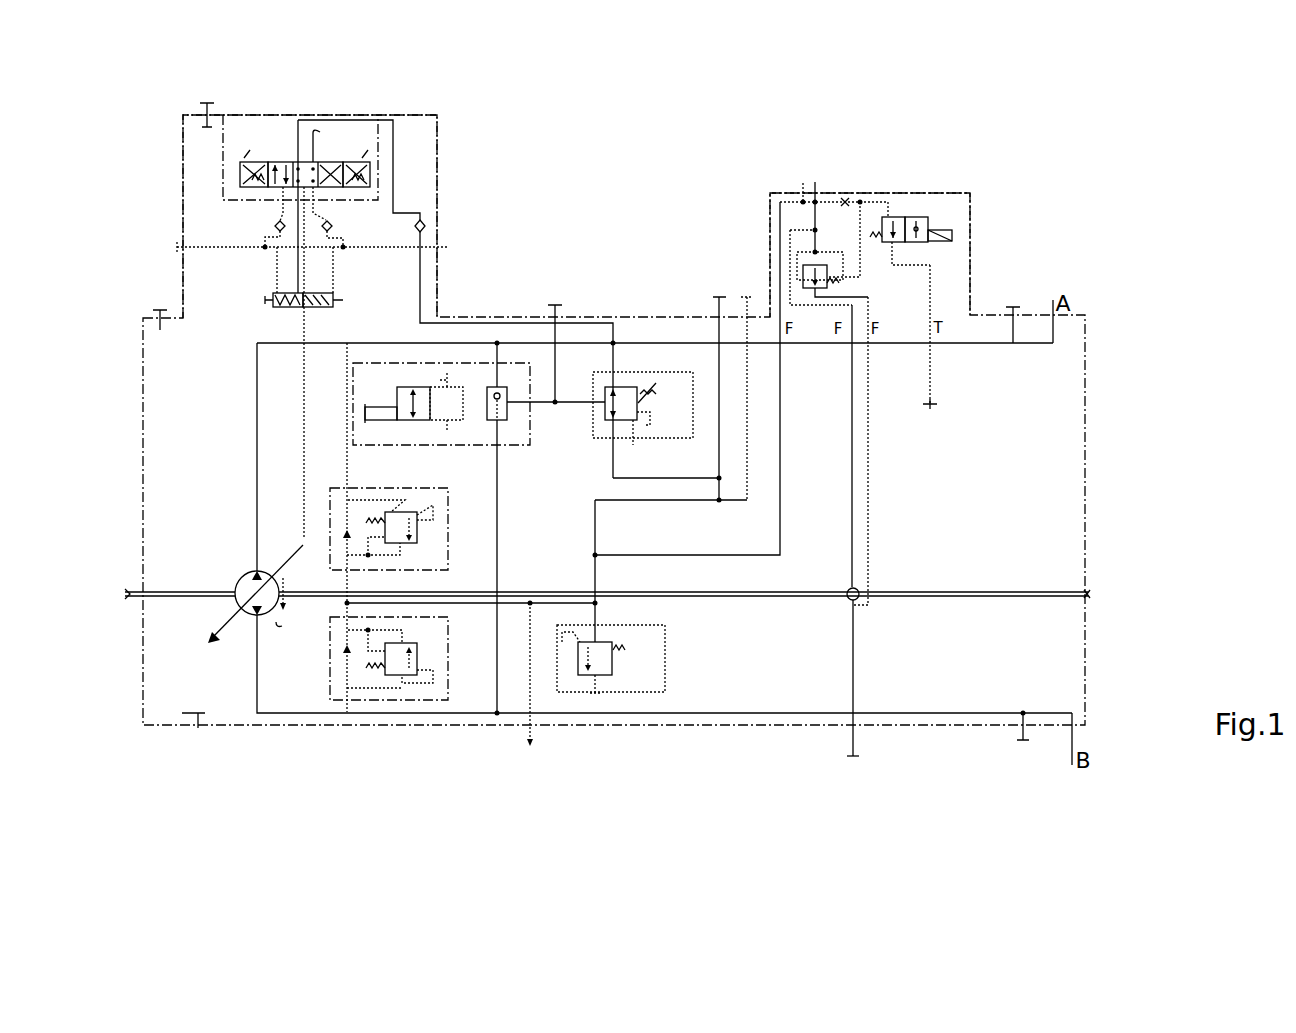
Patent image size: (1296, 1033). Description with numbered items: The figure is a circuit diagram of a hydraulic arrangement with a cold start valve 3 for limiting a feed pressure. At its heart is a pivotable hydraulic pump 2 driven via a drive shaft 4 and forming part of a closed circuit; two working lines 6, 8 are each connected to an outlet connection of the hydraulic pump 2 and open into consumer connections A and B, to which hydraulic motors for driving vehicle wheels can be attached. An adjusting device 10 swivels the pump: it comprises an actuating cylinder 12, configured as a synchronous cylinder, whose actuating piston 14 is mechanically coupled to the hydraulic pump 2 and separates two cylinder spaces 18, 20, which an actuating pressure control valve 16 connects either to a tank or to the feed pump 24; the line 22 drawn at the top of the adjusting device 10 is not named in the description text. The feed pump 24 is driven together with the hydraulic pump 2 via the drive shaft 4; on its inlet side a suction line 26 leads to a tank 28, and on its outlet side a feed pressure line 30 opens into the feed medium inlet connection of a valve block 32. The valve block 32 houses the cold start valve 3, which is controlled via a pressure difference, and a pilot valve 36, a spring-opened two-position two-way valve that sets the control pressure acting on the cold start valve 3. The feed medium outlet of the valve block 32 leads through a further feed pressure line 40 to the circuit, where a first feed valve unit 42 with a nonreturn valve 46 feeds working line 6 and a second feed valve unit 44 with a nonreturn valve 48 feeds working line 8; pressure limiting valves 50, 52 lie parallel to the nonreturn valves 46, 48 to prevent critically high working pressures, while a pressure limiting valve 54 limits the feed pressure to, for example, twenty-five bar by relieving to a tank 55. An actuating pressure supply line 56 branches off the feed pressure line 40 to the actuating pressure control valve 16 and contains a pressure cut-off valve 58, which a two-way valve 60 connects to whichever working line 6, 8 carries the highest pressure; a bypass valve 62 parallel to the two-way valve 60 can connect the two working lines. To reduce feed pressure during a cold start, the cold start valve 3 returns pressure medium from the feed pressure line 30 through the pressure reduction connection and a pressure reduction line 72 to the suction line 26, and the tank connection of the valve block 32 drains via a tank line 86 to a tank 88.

The hydraulic pump 2 is at (236, 572).
The cold start valve 3 is at (803, 282).
The drive shaft 4 is at (167, 598).
The working line 6 is at (257, 490).
The working line 8 is at (257, 690).
The adjusting device 10 is at (173, 140).
The actuating cylinder 12 is at (283, 315).
The actuating piston 14 is at (306, 297).
The actuating pressure control valve 16 is at (269, 135).
The cylinder space 18 is at (281, 290).
The cylinder space 20 is at (328, 306).
The supply line 22 is at (321, 133).
The feed pump 24 is at (858, 600).
The suction line 26 is at (856, 672).
The tank 28 is at (853, 756).
The feed pressure line 30 is at (853, 495).
The valve block 32 is at (968, 208).
The pilot valve 36 is at (900, 213).
The feed pressure line 40 is at (780, 447).
The first feed valve unit 42 is at (370, 487).
The second feed valve unit 44 is at (412, 703).
The nonreturn valve 46 is at (343, 652).
The nonreturn valve 48 is at (347, 690).
The pressure limiting valve 50 is at (420, 527).
The pressure limiting valve 52 is at (487, 712).
The pressure limiting valve 54 is at (612, 660).
The tank 55 is at (595, 695).
The actuating pressure supply line 56 is at (426, 240).
The pressure cut-off valve 58 is at (600, 428).
The two-way valve 60 is at (500, 430).
The bypass valve 62 is at (397, 393).
The pressure reduction line 72 is at (868, 430).
The tank line 86 is at (937, 357).
The tank 88 is at (937, 405).